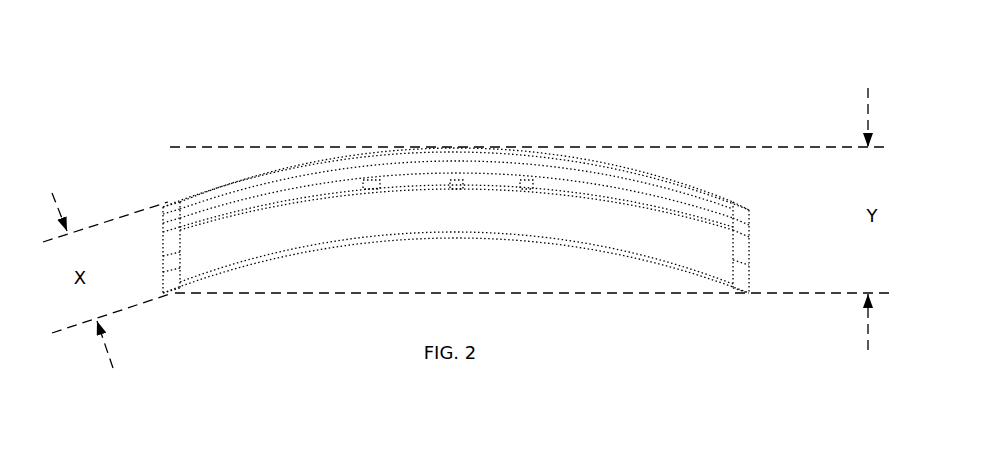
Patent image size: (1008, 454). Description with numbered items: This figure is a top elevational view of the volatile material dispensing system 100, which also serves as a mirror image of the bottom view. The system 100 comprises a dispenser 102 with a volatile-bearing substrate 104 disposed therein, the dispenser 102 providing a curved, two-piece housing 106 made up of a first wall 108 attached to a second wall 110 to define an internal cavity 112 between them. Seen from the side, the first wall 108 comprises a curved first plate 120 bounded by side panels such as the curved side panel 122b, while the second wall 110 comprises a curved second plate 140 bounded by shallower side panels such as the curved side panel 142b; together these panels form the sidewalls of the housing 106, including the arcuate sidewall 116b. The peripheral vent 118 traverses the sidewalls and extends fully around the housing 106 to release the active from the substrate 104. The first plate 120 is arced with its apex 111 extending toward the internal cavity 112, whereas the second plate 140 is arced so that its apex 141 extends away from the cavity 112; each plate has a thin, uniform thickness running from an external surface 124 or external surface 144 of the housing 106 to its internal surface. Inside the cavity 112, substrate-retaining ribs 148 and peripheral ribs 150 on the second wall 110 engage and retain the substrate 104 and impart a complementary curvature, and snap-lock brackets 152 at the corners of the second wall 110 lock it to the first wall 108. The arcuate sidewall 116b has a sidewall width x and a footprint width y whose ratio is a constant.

The volatile material dispensing system 100 is at (107, 93).
The dispenser 102 is at (117, 158).
The volatile-bearing substrate 104 is at (663, 212).
The housing 106 is at (241, 164).
The first wall 108 is at (742, 270).
The second wall 110 is at (742, 212).
The apex 111 is at (455, 243).
The internal cavity 112 is at (563, 187).
The arcuate sidewall 116b is at (715, 200).
The peripheral vent 118 is at (293, 197).
The curved first plate 120 is at (293, 250).
The side panel 122b is at (597, 227).
The external surface 124 is at (430, 238).
The curved second plate 140 is at (205, 196).
The apex 141 is at (455, 147).
The side panel 142b is at (268, 178).
The external surface 144 is at (407, 147).
The substrate-retaining rib 148 is at (373, 180).
The peripheral rib 150 is at (455, 177).
The snap-lock bracket 152 is at (200, 220).